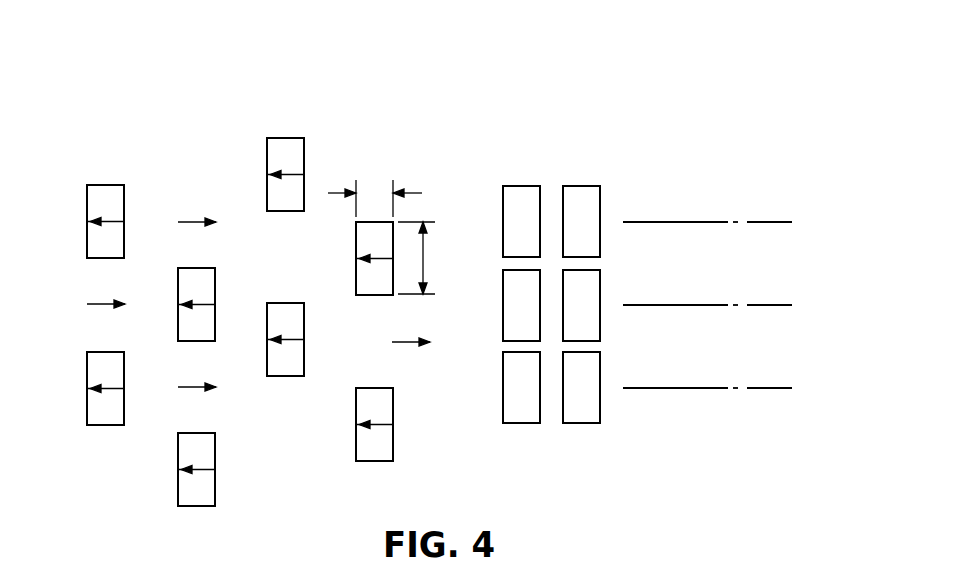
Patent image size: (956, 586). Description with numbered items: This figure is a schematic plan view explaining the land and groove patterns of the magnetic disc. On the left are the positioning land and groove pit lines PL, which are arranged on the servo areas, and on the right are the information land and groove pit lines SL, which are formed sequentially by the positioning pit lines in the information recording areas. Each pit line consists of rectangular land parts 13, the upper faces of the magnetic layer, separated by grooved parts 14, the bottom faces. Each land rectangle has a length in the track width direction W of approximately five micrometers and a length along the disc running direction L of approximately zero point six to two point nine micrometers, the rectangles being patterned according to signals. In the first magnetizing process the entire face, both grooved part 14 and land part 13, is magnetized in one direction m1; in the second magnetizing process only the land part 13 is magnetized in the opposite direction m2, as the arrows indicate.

The land part 13 is at (287, 138).
The grooved part 14 is at (182, 156).
The positioning land and groove pit lines PL is at (327, 87).
The information land and groove pit lines SL is at (618, 152).
The first magnetizing direction m1 is at (104, 304).
The second magnetizing direction m2 is at (112, 390).
The length along the disc running direction L is at (372, 190).
The length in the direction of track width W is at (425, 258).